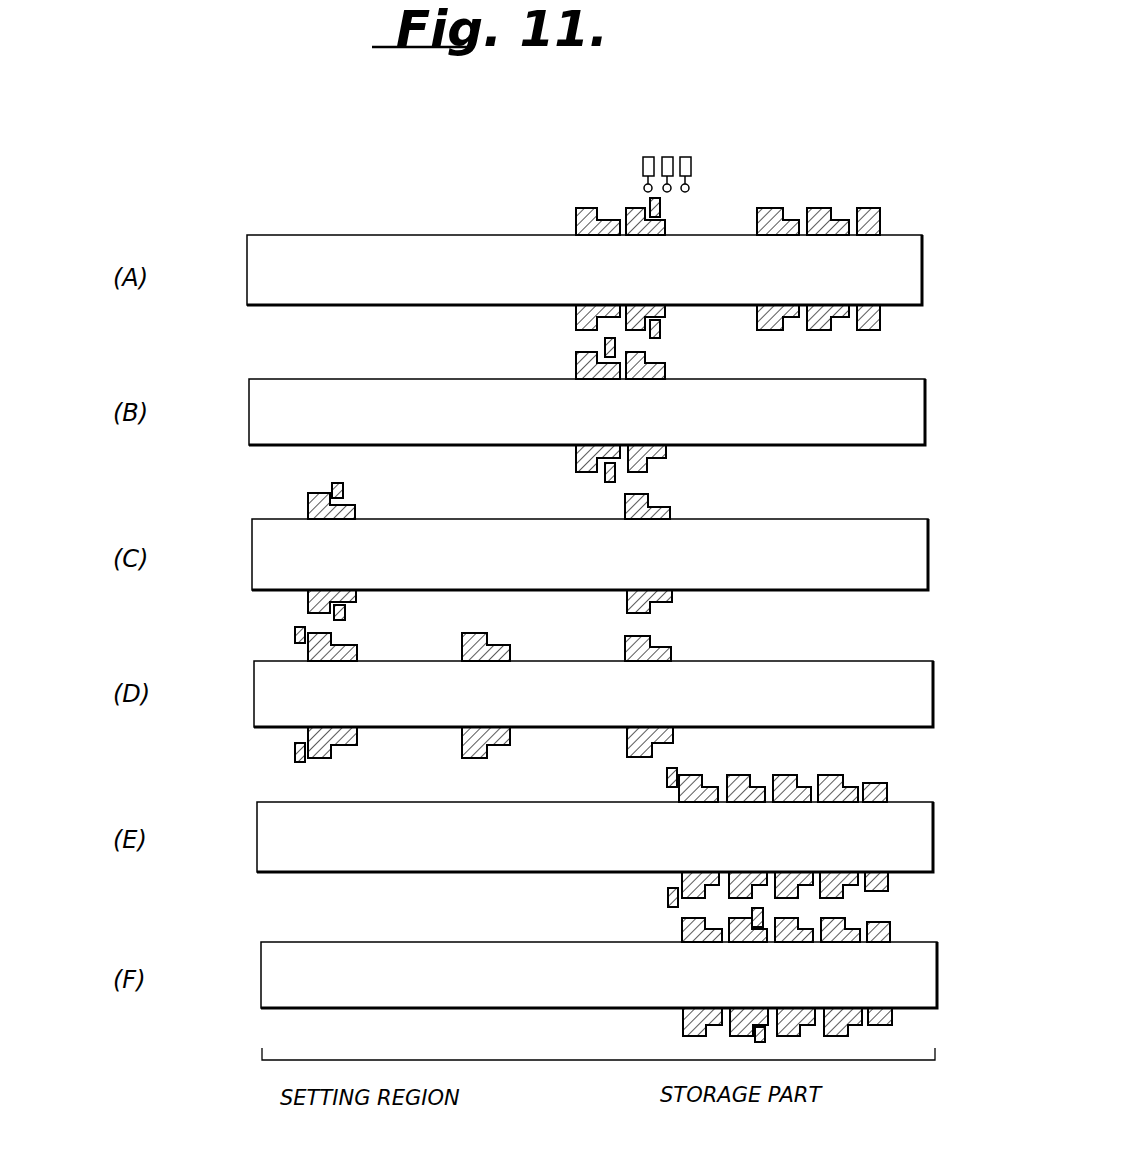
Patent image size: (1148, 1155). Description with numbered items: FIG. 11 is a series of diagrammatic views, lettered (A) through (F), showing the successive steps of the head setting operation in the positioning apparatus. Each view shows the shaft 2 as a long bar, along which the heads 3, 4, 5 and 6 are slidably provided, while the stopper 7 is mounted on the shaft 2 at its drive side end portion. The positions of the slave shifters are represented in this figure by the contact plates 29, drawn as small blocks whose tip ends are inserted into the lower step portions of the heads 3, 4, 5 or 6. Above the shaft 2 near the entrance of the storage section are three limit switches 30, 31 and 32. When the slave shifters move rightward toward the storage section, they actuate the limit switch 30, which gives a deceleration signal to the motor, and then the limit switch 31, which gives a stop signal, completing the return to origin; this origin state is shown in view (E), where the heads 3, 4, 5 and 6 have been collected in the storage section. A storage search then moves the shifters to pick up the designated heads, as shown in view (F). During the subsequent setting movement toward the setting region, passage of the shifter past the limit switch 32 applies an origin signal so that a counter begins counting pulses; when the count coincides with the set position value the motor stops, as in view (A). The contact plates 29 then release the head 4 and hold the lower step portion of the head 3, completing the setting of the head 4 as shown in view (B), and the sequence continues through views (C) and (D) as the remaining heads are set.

The shaft 2 is at (496, 223).
The head 3 is at (590, 197).
The head 4 is at (631, 208).
The head 5 is at (780, 208).
The head 6 is at (826, 208).
The stopper 7 is at (877, 208).
The contact plate 29 is at (295, 752).
The limit switch 30 is at (648, 157).
The limit switch 31 is at (667, 157).
The limit switch 32 is at (685, 157).